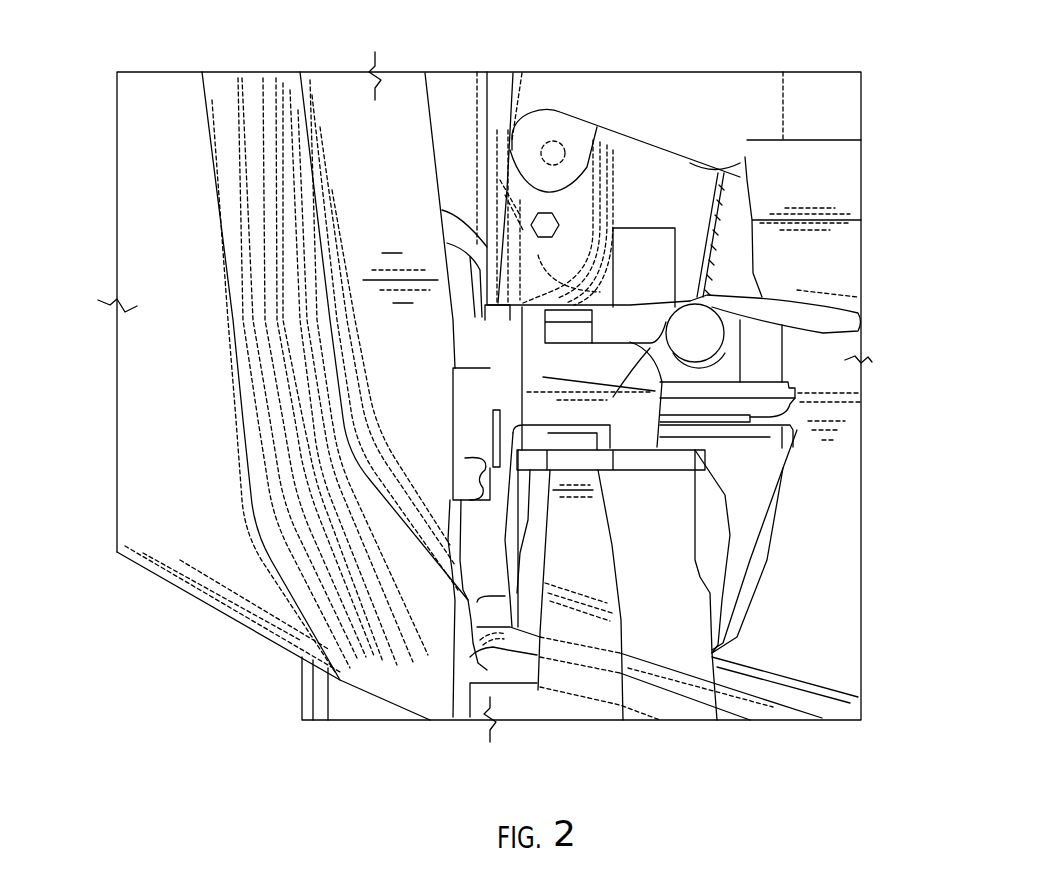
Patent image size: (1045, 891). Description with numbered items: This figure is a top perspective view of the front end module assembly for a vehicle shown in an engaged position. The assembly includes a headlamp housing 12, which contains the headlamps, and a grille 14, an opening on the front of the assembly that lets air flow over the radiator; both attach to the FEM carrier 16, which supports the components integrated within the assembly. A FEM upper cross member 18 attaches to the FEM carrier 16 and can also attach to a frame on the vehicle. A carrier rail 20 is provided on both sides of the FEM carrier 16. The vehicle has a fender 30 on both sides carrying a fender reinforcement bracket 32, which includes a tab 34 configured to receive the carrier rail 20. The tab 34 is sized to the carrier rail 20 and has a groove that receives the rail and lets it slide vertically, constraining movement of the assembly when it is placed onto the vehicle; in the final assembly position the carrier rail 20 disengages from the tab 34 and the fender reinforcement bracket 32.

The headlamp housing 12 is at (587, 570).
The grille 14 is at (473, 657).
The FEM carrier 16 is at (800, 397).
The FEM upper cross member 18 is at (650, 190).
The carrier rail 20 is at (487, 313).
The fender 30 is at (400, 398).
The fender reinforcement bracket 32 is at (472, 400).
The tab 34 is at (523, 303).